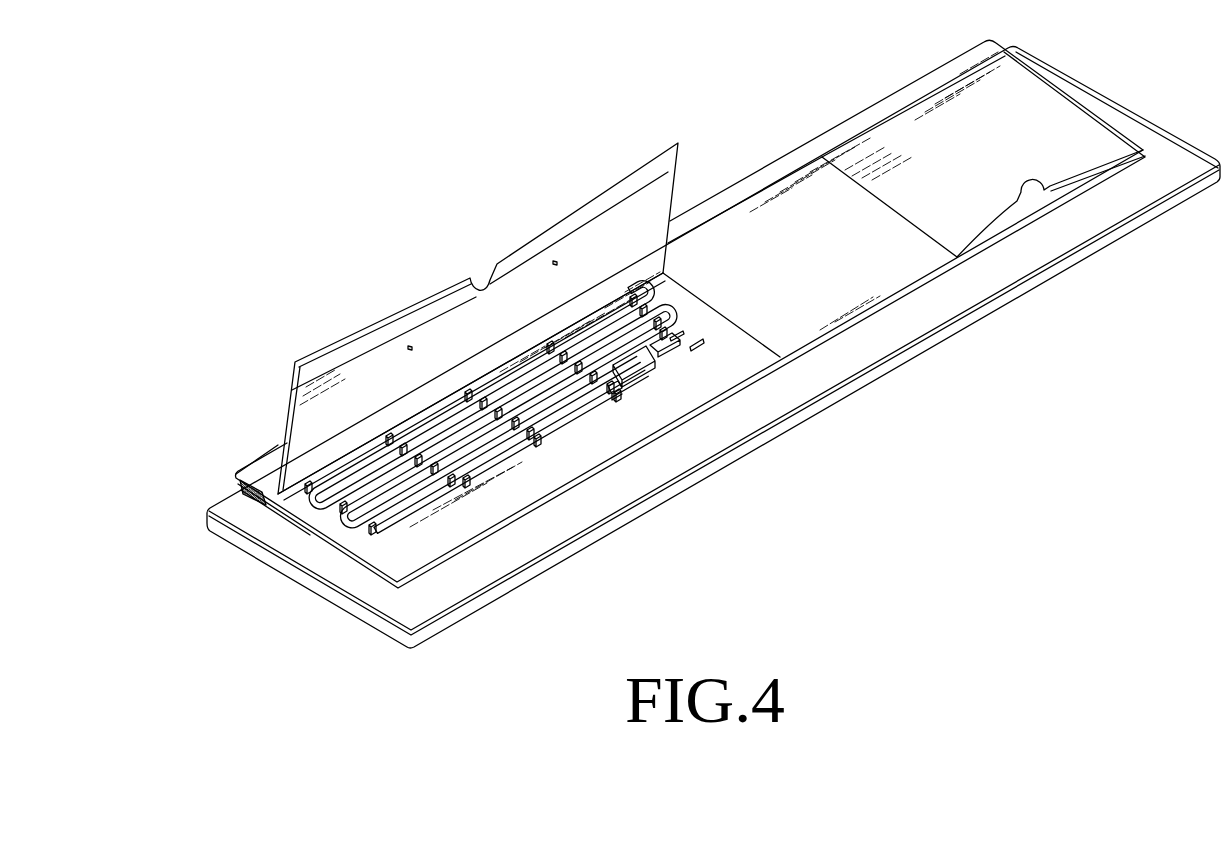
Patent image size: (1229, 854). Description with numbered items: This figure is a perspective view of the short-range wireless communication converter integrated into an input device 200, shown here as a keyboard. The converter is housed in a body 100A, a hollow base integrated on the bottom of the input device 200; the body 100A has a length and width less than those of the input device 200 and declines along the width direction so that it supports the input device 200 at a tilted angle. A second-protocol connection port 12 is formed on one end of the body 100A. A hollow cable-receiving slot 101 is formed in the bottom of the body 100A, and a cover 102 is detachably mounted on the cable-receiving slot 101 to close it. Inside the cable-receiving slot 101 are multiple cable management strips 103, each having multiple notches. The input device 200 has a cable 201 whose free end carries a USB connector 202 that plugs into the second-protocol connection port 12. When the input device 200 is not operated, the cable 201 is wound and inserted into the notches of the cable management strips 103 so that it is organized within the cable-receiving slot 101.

The input device 200 is at (877, 375).
The body 100A is at (784, 170).
The cable-receiving slot 101 is at (697, 302).
The cover 102 is at (600, 204).
The second-protocol connection port 12 is at (236, 493).
The cable 201 is at (560, 410).
The USB connector 202 is at (647, 367).
The cable management strips 103 is at (537, 440).